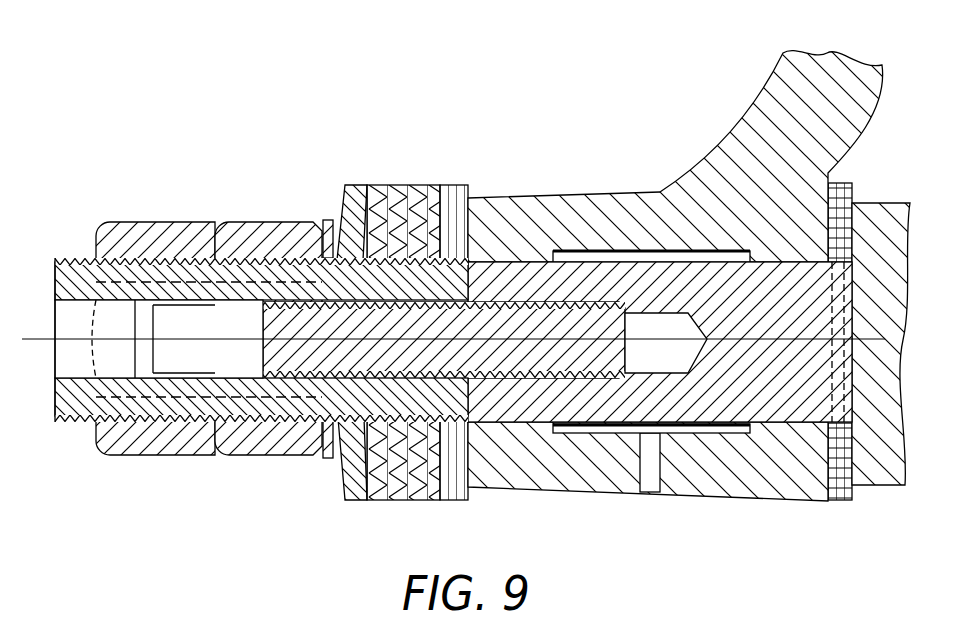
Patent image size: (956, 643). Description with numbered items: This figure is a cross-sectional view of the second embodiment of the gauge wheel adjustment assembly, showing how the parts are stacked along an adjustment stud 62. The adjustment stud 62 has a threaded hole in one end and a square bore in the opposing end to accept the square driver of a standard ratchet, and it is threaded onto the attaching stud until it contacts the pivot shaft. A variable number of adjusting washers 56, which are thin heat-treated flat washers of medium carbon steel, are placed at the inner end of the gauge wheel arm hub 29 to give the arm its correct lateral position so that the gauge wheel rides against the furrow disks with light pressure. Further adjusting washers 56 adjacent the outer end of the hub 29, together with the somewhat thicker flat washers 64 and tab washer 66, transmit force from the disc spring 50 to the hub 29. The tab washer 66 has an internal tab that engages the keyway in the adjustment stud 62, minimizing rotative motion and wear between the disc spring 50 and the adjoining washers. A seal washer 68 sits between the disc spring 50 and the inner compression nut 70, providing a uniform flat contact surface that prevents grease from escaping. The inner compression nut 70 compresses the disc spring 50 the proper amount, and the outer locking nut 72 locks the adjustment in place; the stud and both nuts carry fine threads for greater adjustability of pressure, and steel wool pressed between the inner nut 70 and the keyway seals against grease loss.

The gauge wheel arm hub 29 is at (602, 197).
The disc spring 50 is at (345, 188).
The adjusting washers 56 is at (465, 185).
The adjustment stud 62 is at (55, 385).
The flat washers 64 is at (398, 500).
The tab washer 66 is at (380, 185).
The seal washer 68 is at (325, 462).
The inner compression nut 70 is at (243, 222).
The outer locking nut 72 is at (138, 222).